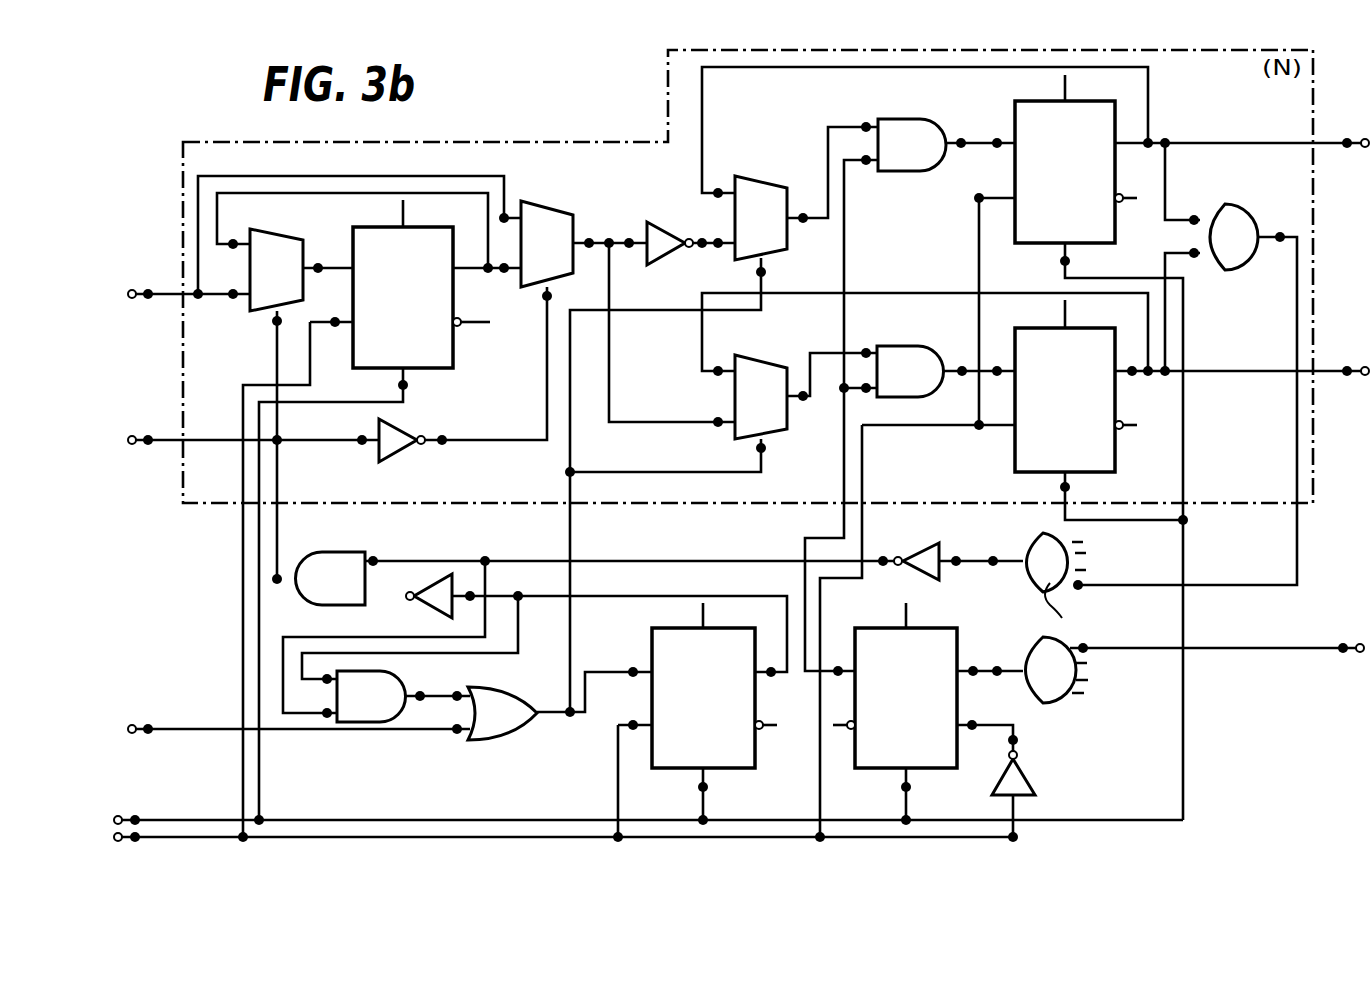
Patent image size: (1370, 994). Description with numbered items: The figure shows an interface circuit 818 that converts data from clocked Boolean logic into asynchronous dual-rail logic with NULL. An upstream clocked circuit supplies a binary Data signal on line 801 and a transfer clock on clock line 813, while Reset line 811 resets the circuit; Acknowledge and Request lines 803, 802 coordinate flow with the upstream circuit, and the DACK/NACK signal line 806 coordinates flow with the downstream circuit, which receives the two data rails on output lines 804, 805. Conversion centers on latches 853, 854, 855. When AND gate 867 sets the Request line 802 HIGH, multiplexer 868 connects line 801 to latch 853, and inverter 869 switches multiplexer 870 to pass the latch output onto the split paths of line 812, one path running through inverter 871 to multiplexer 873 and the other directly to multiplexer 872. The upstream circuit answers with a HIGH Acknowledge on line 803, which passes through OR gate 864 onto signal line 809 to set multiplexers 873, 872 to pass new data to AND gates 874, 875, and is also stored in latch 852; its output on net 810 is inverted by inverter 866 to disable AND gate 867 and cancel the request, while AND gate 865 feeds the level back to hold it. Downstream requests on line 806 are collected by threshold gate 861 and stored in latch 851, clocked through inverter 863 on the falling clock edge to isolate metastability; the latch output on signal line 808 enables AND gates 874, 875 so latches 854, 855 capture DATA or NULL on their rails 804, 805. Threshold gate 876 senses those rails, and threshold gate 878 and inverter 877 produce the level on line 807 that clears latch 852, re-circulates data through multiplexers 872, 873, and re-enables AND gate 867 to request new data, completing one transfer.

The Data signal line 801 is at (165, 298).
The Request line 802 is at (168, 443).
The Acknowledge line 803 is at (197, 729).
The Data_0 signal line 804 is at (1327, 147).
The Data_1 signal line 805 is at (1327, 375).
The DACK/NACK signal line 806 is at (1245, 652).
The signal line 807 is at (634, 561).
The signal line 808 is at (805, 541).
The signal line 809 is at (570, 522).
The signal net 810 is at (603, 596).
The Reset line 811 is at (338, 819).
The signal line 812 is at (609, 366).
The Clock_1 line 813 is at (314, 840).
The interface circuit 818 is at (1252, 753).
The latch 851 is at (880, 768).
The latch 852 is at (652, 632).
The latch 853 is at (453, 354).
The latch 854 is at (1015, 103).
The latch 855 is at (1015, 449).
The threshold gate 861 is at (1043, 660).
The inverter 863 is at (1028, 778).
The OR gate 864 is at (492, 740).
The AND gate 865 is at (352, 722).
The inverter 866 is at (418, 612).
The AND gate 867 is at (342, 552).
The multiplexer 868 is at (283, 237).
The inverter 869 is at (400, 448).
The multiplexer 870 is at (542, 206).
The inverter 871 is at (647, 224).
The multiplexer 872 is at (758, 362).
The multiplexer 873 is at (756, 180).
The AND gate 874 is at (893, 119).
The AND gate 875 is at (907, 346).
The threshold gate 876 is at (1233, 208).
The inverter 877 is at (950, 522).
The threshold gate 878 is at (1030, 585).